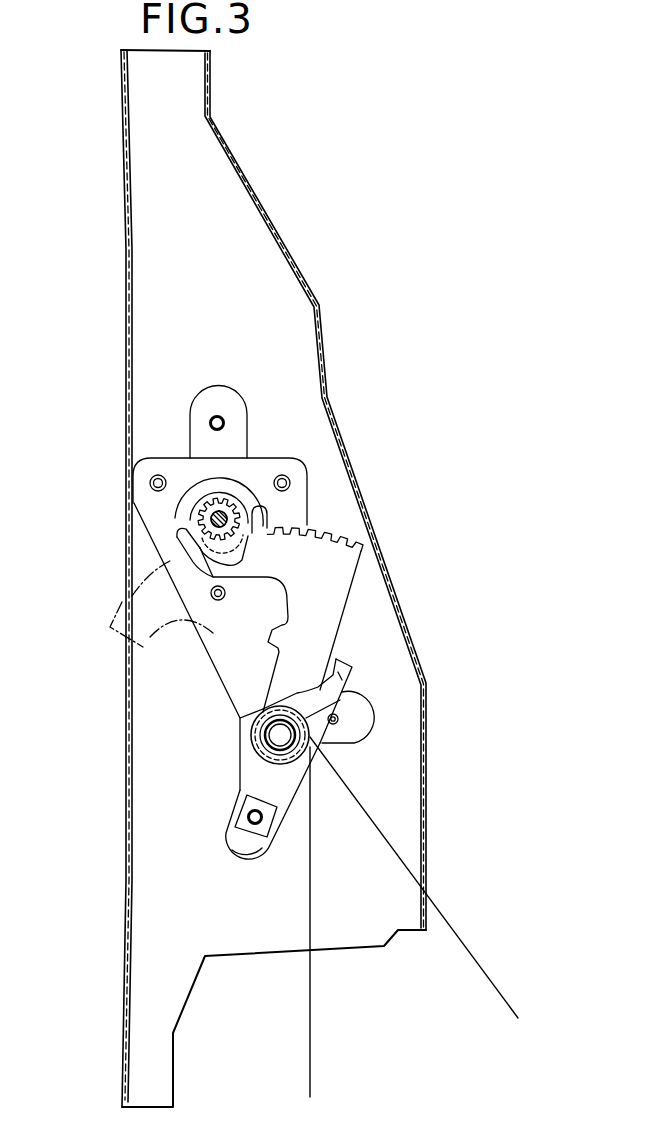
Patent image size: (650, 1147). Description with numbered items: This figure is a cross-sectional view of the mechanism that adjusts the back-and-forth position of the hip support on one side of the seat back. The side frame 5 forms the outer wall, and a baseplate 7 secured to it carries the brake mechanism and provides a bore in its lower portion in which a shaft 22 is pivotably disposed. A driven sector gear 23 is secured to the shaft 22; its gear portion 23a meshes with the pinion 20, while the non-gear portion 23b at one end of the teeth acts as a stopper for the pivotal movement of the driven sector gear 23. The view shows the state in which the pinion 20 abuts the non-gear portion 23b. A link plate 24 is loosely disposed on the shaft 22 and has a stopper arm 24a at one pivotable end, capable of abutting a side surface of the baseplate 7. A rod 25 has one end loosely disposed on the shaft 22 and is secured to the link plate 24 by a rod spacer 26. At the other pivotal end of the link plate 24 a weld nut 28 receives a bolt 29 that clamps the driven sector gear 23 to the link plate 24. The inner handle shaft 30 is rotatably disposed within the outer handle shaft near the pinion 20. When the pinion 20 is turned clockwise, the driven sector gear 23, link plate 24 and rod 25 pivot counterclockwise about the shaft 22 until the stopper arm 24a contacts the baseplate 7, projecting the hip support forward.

The side frame 5 is at (277, 272).
The baseplate 7 is at (297, 503).
The pinion 20 is at (223, 512).
The shaft 22 is at (242, 787).
The driven sector gear 23 is at (340, 566).
The gear portion 23a is at (353, 535).
The non-gear portion 23b is at (178, 517).
The link plate 24 is at (240, 718).
The stopper arm 24a is at (340, 668).
The rod 25 is at (255, 755).
The rod spacer 26 is at (352, 684).
The weld nut 28 is at (240, 852).
The bolt 29 is at (236, 831).
The inner handle shaft 30 is at (217, 512).